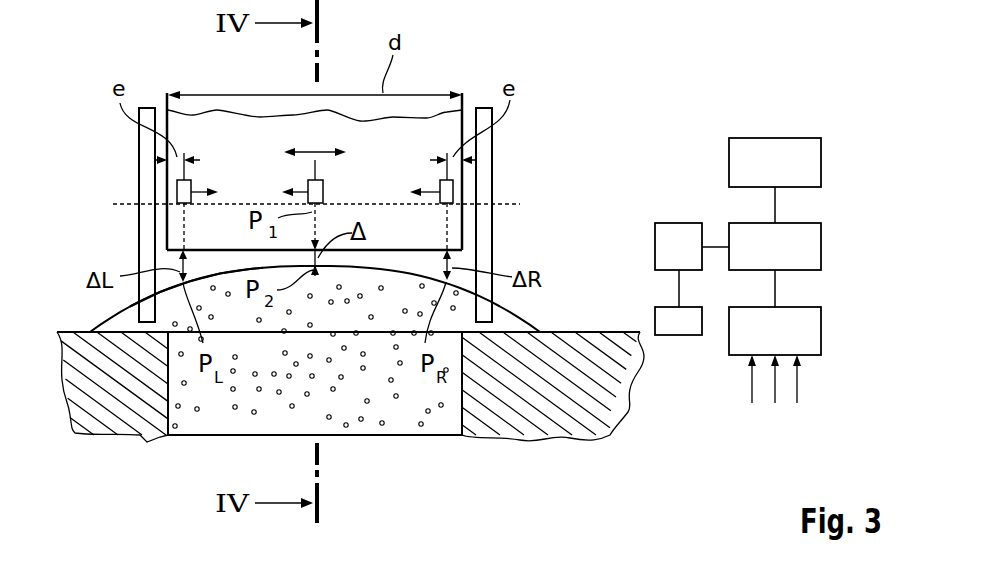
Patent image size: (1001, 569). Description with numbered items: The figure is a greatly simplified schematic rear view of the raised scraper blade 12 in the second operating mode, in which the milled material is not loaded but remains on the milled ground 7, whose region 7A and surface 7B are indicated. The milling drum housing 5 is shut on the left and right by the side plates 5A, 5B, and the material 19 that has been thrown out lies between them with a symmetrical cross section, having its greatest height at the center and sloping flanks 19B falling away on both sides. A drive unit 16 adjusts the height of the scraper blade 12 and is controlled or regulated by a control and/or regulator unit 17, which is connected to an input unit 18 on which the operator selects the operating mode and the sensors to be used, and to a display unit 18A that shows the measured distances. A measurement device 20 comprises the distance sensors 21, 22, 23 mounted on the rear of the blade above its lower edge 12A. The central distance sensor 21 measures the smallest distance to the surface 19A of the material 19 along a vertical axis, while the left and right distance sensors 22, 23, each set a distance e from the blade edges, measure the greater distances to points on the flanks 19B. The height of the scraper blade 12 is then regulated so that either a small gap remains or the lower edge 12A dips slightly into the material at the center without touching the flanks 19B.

The milling drum housing 5 is at (522, 128).
The side plate 5A is at (140, 168).
The side plate 5B is at (492, 168).
The milled ground 7 is at (580, 455).
The trench / recess in substrate 7A is at (380, 422).
The surface of the milled ground 7B is at (610, 327).
The scraper blade 12 is at (246, 135).
The lower edge of the scraper blade 12A is at (462, 262).
The drive unit 16 is at (821, 163).
The control and/or regulator unit 17 is at (821, 248).
The input unit 18 is at (679, 222).
The display unit 18A is at (678, 338).
The material that has been thrown out 19 is at (460, 257).
The surface of the material 19A is at (263, 268).
The sloping flanks 19B is at (122, 318).
The measurement device 20 is at (821, 332).
The distance sensor 21 is at (325, 192).
The left distance sensor 22 is at (177, 193).
The right distance sensor 23 is at (455, 192).